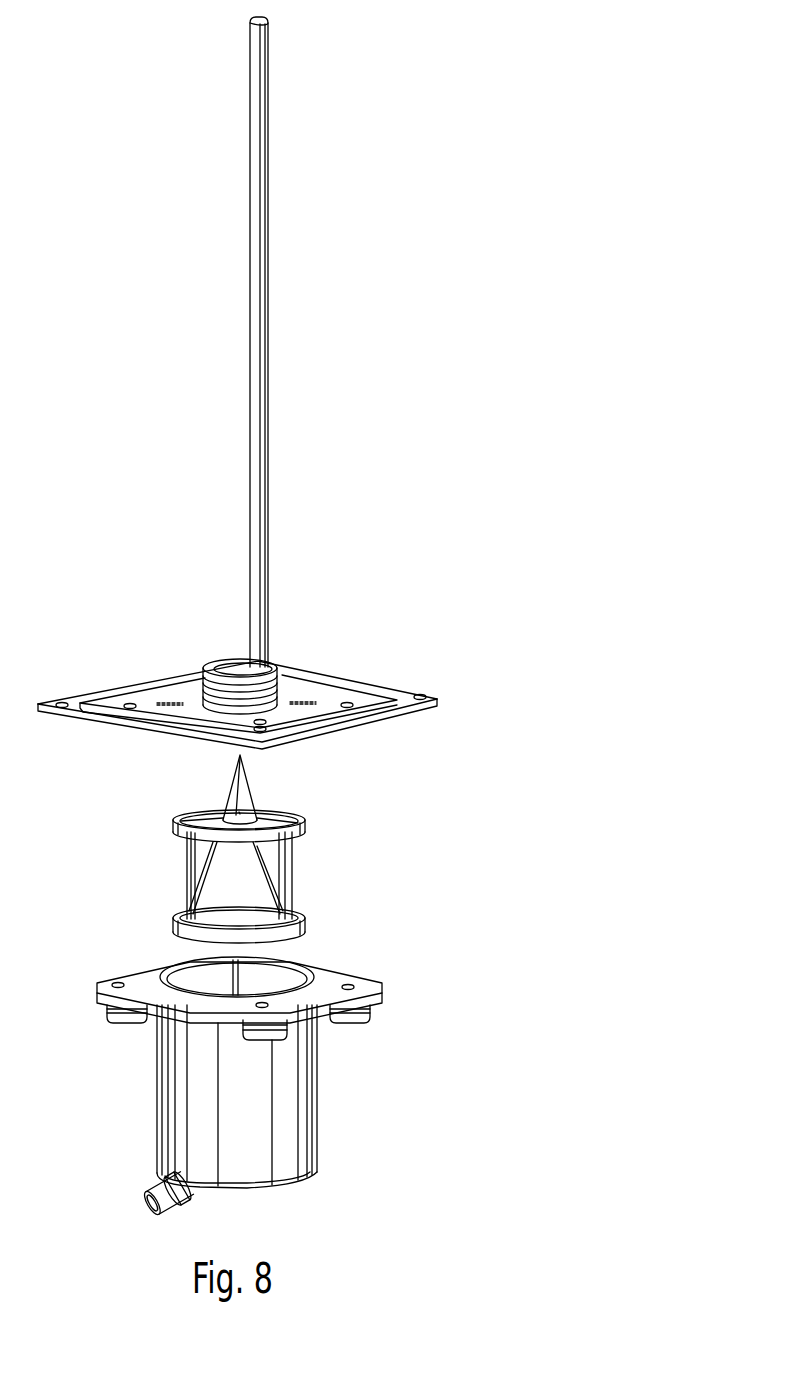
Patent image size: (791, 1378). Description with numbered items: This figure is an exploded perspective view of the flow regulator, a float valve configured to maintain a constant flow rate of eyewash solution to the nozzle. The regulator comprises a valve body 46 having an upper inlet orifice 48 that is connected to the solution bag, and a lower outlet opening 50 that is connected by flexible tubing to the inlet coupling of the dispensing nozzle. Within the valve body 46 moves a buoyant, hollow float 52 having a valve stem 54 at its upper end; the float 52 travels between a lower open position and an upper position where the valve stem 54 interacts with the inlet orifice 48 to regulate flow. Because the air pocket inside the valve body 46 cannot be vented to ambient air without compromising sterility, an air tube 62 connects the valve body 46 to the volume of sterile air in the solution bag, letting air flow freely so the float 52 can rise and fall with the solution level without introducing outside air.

The air tube 62 is at (267, 492).
The upper inlet orifice 48 is at (232, 660).
The valve stem 54 is at (248, 800).
The float 52 is at (300, 910).
The valve body 46 is at (290, 1128).
The lower outlet opening 50 is at (167, 1183).